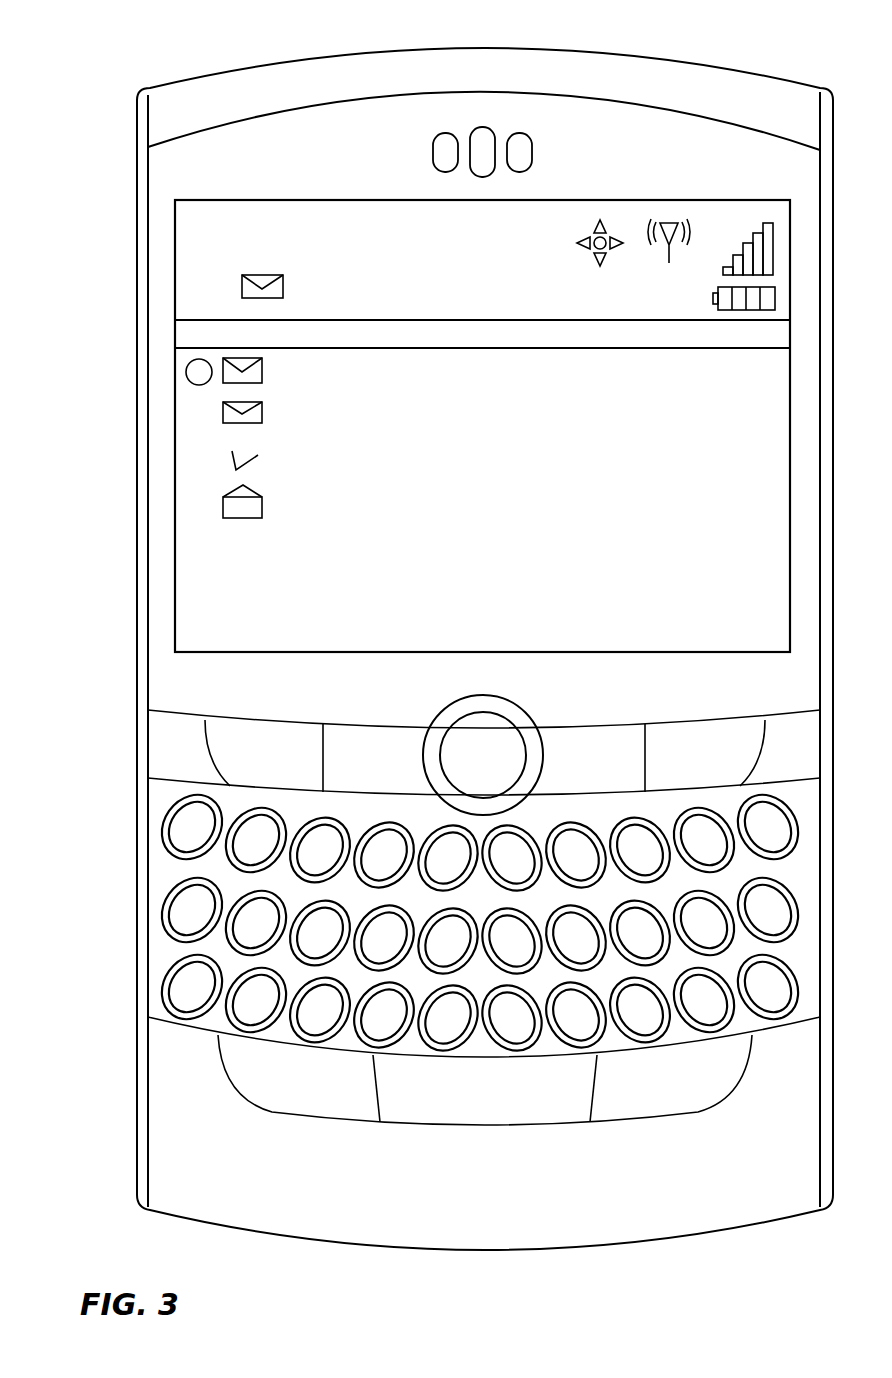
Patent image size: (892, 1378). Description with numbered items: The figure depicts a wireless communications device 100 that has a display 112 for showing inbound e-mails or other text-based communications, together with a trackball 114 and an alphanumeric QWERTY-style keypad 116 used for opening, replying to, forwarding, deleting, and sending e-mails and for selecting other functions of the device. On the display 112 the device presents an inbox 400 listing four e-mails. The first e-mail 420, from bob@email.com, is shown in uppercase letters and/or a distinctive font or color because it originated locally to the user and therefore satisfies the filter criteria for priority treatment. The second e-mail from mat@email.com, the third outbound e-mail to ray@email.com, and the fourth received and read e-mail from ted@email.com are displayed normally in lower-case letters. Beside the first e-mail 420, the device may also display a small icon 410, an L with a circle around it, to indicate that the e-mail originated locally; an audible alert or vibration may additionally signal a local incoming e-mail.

The wireless communications device 100 is at (157, 85).
The display 112 is at (185, 244).
The trackball 114 is at (458, 728).
The alphanumeric keypad 116 is at (185, 896).
The inbox 400 is at (170, 372).
The icon 410 is at (199, 388).
The first e-mail 420 is at (371, 355).